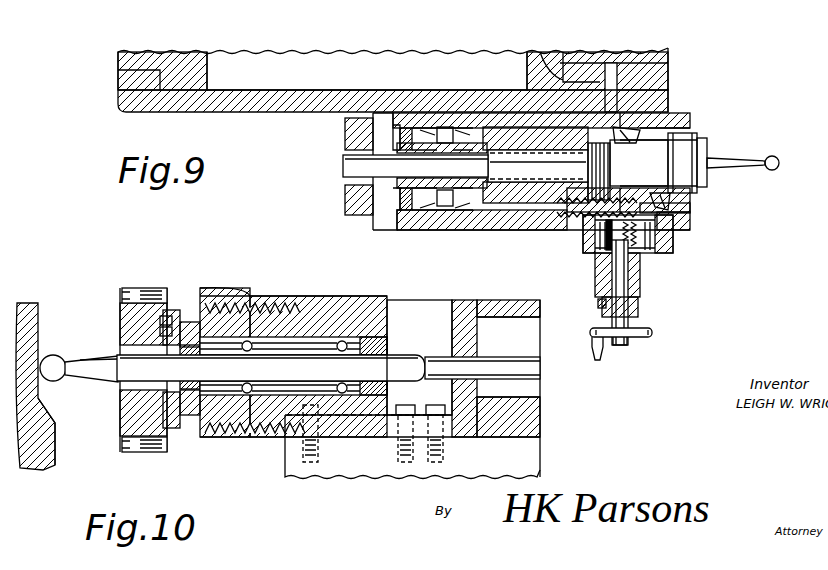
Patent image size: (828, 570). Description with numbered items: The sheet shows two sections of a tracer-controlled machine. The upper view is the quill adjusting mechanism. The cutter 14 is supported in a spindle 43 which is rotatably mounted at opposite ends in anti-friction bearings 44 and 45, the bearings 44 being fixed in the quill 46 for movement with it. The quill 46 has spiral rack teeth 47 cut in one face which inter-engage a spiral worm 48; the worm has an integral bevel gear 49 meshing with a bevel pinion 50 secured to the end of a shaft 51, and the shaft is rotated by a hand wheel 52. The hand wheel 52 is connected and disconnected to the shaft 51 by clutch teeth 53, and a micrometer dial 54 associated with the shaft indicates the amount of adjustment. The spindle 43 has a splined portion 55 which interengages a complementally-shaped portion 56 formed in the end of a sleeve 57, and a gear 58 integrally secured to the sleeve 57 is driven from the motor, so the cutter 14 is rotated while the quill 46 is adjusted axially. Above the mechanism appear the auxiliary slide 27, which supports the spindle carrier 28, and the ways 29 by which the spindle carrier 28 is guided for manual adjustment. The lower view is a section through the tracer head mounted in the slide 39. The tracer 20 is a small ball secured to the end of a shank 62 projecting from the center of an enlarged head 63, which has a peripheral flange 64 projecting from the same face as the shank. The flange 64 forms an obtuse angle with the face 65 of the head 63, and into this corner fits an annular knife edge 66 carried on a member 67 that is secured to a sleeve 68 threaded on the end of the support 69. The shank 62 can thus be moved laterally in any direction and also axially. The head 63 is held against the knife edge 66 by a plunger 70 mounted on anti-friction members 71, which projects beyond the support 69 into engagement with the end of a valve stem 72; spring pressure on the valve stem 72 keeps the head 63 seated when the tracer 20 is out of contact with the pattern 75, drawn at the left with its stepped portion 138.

In FIG. 9, the cutter 14 is at (774, 155).
In FIG. 9, the auxiliary slide 27 is at (363, 67).
In FIG. 9, the spindle carrier 28 is at (270, 103).
In FIG. 9, the ways 29 is at (167, 80).
In FIG. 9, the spindle 43 is at (683, 147).
In FIG. 9, the anti-friction bearings 44 is at (675, 214).
In FIG. 9, the anti-friction bearings 45 is at (428, 203).
In FIG. 9, the quill 46 is at (556, 222).
In FIG. 9, the spiral rack teeth 47 is at (588, 223).
In FIG. 9, the spiral worm 48 is at (645, 257).
In FIG. 9, the bevel gear 49 is at (613, 243).
In FIG. 9, the bevel pinion 50 is at (634, 268).
In FIG. 9, the shaft 51 is at (630, 288).
In FIG. 9, the hand wheel 52 is at (652, 332).
In FIG. 9, the clutch teeth 53 is at (608, 313).
In FIG. 9, the micrometer dial 54 is at (598, 302).
In FIG. 9, the splined portion 55 is at (525, 200).
In FIG. 9, the complementally-shaped portion 56 is at (545, 196).
In FIG. 9, the sleeve 57 is at (500, 200).
In FIG. 9, the gear 58 is at (353, 217).
In FIG. 10, the tracer 20 is at (55, 361).
In FIG. 10, the slide 39 is at (457, 310).
In FIG. 10, the shank 62 is at (118, 358).
In FIG. 10, the head 63 is at (176, 330).
In FIG. 10, the peripheral flange 64 is at (158, 320).
In FIG. 10, the face 65 is at (180, 330).
In FIG. 10, the annular knife edge 66 is at (166, 334).
In FIG. 10, the member 67 is at (126, 307).
In FIG. 10, the sleeve 68 is at (233, 293).
In FIG. 10, the support 69 is at (253, 312).
In FIG. 10, the plunger 70 is at (310, 367).
In FIG. 10, the anti-friction members 71 is at (247, 393).
In FIG. 10, the valve stem 72 is at (437, 360).
In FIG. 10, the pattern 75 is at (38, 304).
In FIG. 10, the plate step 138 is at (39, 397).